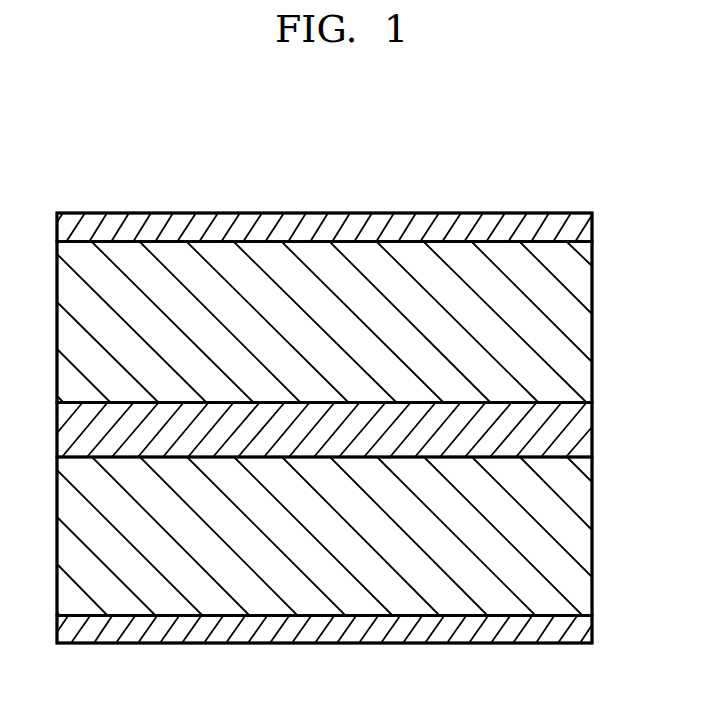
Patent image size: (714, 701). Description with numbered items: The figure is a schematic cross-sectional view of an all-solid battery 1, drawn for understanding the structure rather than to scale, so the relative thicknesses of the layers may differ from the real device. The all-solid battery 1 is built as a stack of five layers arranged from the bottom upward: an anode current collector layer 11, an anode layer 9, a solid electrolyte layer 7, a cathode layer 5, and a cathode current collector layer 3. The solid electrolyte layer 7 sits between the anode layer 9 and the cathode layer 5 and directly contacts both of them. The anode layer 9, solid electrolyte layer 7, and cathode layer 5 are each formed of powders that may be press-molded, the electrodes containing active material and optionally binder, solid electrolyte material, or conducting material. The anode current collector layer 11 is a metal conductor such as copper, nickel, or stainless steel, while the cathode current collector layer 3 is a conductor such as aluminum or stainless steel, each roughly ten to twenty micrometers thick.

The all-solid battery 1 is at (349, 372).
The cathode current collector layer 3 is at (580, 224).
The cathode layer 5 is at (580, 325).
The solid electrolyte layer 7 is at (580, 425).
The anode layer 9 is at (580, 538).
The anode current collector layer 11 is at (580, 626).